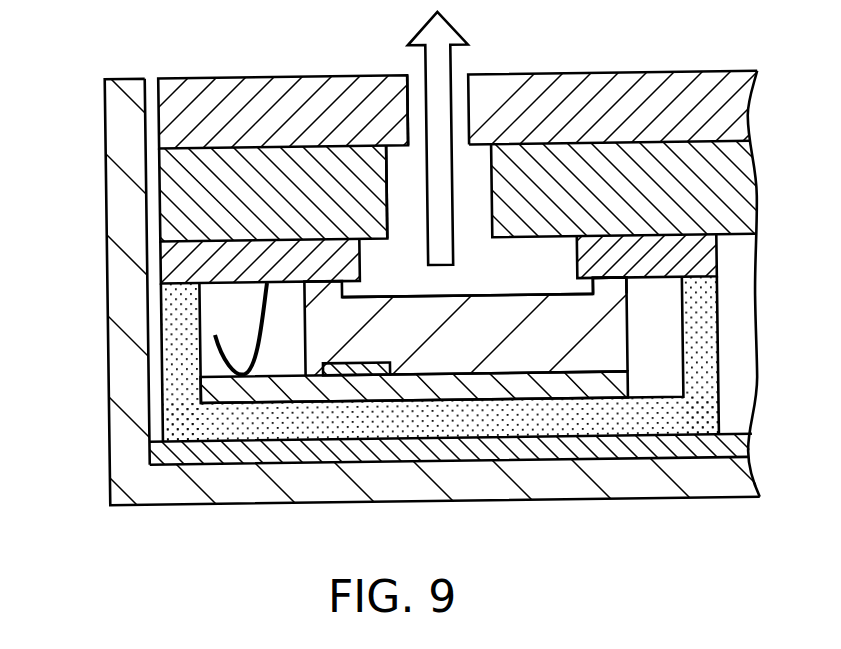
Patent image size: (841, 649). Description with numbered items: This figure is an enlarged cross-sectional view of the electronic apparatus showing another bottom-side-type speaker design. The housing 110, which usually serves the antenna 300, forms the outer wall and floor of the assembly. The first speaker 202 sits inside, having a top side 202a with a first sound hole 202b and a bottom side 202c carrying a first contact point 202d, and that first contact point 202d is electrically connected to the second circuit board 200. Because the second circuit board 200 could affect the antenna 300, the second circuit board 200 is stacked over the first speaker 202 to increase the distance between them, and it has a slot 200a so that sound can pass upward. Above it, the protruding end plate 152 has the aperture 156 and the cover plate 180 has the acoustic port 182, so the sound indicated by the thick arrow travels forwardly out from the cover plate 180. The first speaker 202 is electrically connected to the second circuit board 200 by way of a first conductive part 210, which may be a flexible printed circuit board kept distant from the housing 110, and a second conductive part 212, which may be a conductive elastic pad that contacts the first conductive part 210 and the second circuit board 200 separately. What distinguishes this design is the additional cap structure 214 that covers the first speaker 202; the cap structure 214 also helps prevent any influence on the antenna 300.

The housing 110 is at (102, 148).
The protruding end plate 152 is at (170, 203).
The aperture 156 is at (397, 187).
The cover plate 180 is at (170, 117).
The acoustic port 182 is at (414, 110).
The second circuit board 200 is at (167, 265).
The slot 200a is at (570, 252).
The first speaker 202 is at (513, 347).
The top side 202a is at (613, 267).
The first sound hole 202b is at (535, 282).
The bottom side 202c is at (442, 377).
The first contact point 202d is at (357, 373).
The first conductive part 210 is at (210, 392).
The second conductive part 212 is at (210, 342).
The cap structure 214 is at (172, 425).
The antenna 300 is at (172, 455).